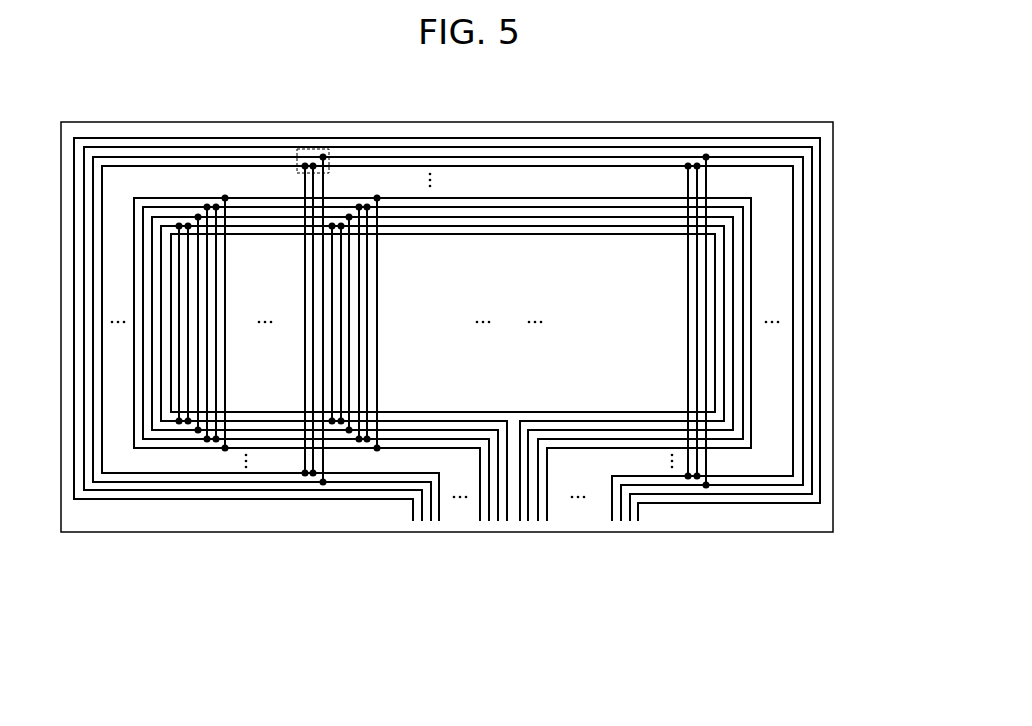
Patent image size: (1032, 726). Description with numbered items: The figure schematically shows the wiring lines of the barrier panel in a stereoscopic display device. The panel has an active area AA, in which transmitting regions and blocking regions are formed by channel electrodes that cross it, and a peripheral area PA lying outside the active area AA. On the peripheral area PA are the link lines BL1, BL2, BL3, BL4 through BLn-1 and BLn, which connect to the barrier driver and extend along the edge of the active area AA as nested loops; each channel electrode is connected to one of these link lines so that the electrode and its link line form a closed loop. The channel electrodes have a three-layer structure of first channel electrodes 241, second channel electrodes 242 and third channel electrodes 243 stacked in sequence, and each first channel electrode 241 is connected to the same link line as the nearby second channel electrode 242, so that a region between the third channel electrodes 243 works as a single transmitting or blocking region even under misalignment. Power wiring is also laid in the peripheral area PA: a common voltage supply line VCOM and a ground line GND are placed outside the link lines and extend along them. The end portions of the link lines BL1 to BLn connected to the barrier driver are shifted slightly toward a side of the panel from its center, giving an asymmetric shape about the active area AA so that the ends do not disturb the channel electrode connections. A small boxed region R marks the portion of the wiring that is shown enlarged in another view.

The peripheral area PA is at (820, 519).
The active area AA is at (606, 298).
The R region R is at (312, 148).
The first channel electrodes 241 is at (684, 185).
The second channel electrodes 242 is at (697, 180).
The third channel electrodes 243 is at (709, 178).
The ground line GND is at (697, 323).
The common voltage supply line VCOM is at (412, 508).
The link line BLn-1 is at (437, 510).
The link line BLn is at (622, 518).
The link line BL1 is at (504, 522).
The link line BL2 is at (522, 522).
The link line BL3 is at (489, 522).
The link line BL4 is at (543, 522).